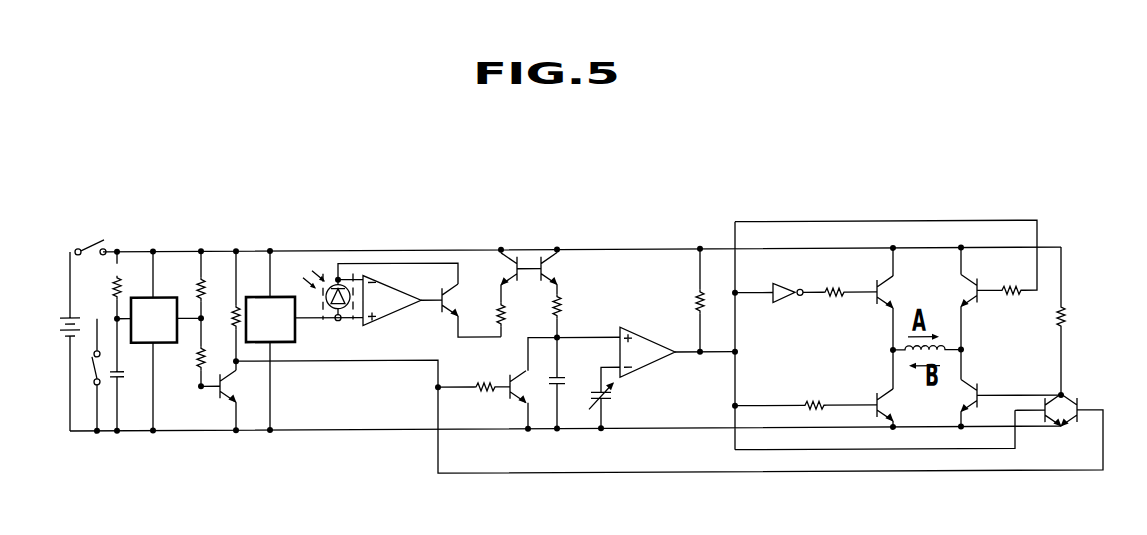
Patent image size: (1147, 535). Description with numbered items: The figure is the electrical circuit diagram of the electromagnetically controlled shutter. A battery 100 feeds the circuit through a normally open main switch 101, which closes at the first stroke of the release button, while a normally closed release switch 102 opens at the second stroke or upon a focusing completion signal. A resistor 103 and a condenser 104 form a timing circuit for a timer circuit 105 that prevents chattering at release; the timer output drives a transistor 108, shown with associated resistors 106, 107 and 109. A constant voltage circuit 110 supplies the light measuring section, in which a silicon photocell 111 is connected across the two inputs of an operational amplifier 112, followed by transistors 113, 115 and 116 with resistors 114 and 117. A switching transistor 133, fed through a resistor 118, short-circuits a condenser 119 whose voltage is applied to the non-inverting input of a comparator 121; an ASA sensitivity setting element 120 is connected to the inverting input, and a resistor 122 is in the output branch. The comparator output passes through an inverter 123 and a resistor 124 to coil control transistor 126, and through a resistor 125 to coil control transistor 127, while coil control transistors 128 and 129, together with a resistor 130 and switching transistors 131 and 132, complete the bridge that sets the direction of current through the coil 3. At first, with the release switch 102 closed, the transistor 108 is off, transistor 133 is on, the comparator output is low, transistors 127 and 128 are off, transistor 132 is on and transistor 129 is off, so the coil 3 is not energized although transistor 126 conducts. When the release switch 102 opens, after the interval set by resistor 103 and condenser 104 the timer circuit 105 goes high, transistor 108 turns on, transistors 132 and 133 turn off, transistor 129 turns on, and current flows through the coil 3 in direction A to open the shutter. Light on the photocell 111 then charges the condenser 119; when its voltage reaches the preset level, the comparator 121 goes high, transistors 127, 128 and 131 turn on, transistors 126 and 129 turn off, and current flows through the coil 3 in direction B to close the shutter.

The coil 3 is at (943, 350).
The battery 100 is at (50, 341).
The main switch 101 is at (102, 245).
The release switch 102 is at (95, 373).
The resistor 103 is at (99, 285).
The condenser 104 is at (117, 379).
The timer circuit 105 is at (159, 340).
The resistor 106 is at (183, 352).
The resistor 107 is at (201, 291).
The transistor 108 is at (228, 388).
The resistor 109 is at (222, 304).
The constant voltage circuit 110 is at (304, 341).
The photosensitive element 111 is at (339, 321).
The operational amplifier 112 is at (393, 311).
The transistor 113 is at (460, 300).
The resistor 114 is at (521, 311).
The transistor 115 is at (512, 272).
The transistor 116 is at (546, 272).
The resistor 117 is at (576, 313).
The resistor 118 is at (472, 370).
The condenser 119 is at (576, 384).
The variable capacitor 120 is at (620, 399).
The comparator 121 is at (646, 348).
The resistor 122 is at (699, 295).
The inverter 123 is at (797, 282).
The resistor 124 is at (848, 277).
The resistor 125 is at (804, 391).
The coil control transistor 126 is at (903, 299).
The coil control transistor 127 is at (903, 390).
The coil control transistor 128 is at (980, 295).
The coil control transistor 129 is at (986, 390).
The resistor 130 is at (1079, 322).
The switching transistor 131 is at (1052, 423).
The switching transistor 132 is at (1081, 408).
The switching transistor 133 is at (512, 390).